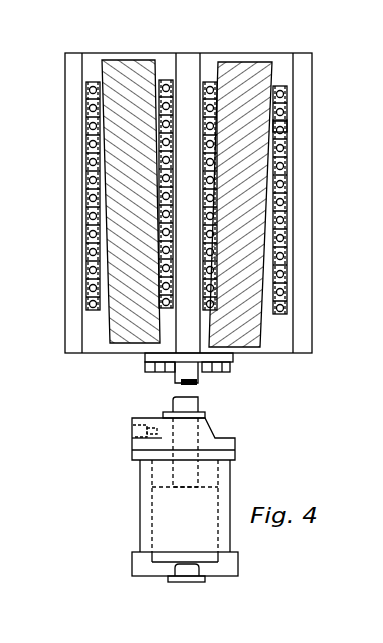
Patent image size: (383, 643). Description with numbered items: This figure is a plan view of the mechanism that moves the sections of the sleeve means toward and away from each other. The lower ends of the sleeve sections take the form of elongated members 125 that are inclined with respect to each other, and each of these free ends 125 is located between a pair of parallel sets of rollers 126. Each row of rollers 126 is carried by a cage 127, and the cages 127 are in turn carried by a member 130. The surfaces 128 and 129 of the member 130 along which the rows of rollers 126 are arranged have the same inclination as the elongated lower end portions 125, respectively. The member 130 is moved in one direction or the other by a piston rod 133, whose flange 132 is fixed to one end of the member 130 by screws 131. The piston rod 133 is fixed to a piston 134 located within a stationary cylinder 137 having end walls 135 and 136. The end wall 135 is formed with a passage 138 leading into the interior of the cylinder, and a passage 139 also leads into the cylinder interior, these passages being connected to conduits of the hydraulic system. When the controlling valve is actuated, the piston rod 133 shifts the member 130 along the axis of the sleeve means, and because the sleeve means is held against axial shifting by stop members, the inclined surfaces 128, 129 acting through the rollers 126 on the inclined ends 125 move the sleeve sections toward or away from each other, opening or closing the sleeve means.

The elongated member 125 is at (230, 70).
The rollers 126 is at (285, 182).
The cage 127 is at (280, 125).
The surface 128 is at (205, 209).
The surface 129 is at (165, 198).
The member 130 is at (296, 345).
The screws 131 is at (218, 372).
The flange 132 is at (148, 360).
The piston rod 133 is at (180, 378).
The piston 134 is at (150, 485).
The end wall 135 is at (162, 443).
The end wall 136 is at (133, 566).
The stationary cylinder 137 is at (160, 522).
The passage 138 is at (132, 429).
The passage 139 is at (184, 582).